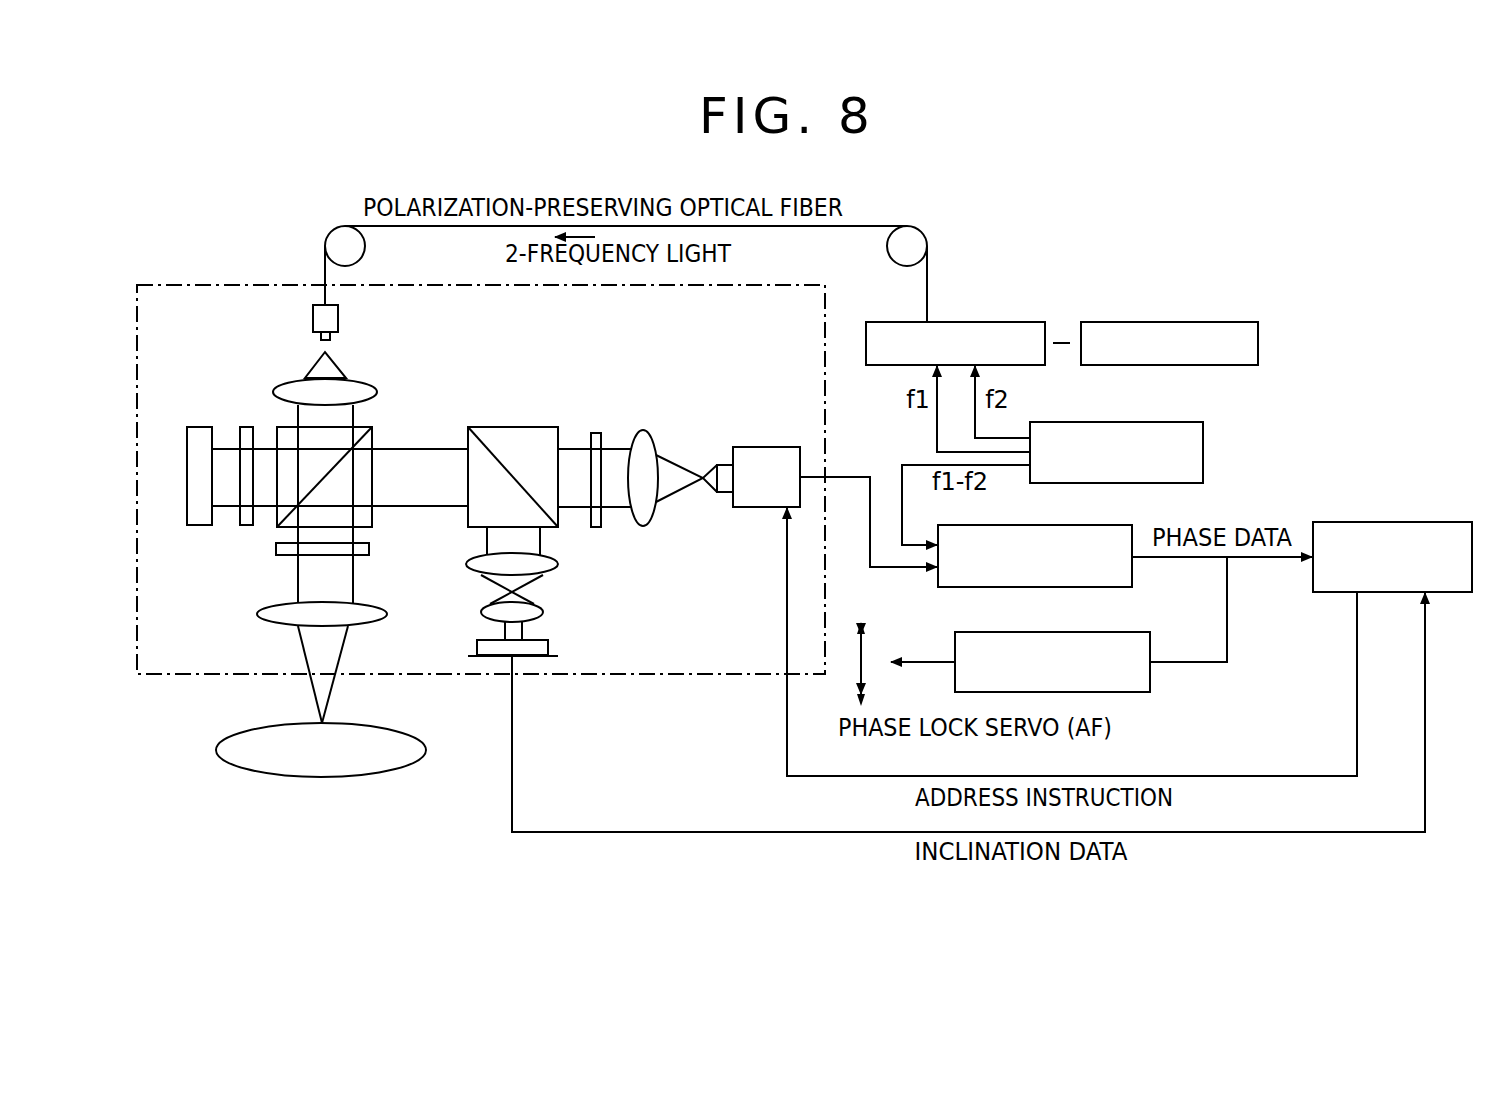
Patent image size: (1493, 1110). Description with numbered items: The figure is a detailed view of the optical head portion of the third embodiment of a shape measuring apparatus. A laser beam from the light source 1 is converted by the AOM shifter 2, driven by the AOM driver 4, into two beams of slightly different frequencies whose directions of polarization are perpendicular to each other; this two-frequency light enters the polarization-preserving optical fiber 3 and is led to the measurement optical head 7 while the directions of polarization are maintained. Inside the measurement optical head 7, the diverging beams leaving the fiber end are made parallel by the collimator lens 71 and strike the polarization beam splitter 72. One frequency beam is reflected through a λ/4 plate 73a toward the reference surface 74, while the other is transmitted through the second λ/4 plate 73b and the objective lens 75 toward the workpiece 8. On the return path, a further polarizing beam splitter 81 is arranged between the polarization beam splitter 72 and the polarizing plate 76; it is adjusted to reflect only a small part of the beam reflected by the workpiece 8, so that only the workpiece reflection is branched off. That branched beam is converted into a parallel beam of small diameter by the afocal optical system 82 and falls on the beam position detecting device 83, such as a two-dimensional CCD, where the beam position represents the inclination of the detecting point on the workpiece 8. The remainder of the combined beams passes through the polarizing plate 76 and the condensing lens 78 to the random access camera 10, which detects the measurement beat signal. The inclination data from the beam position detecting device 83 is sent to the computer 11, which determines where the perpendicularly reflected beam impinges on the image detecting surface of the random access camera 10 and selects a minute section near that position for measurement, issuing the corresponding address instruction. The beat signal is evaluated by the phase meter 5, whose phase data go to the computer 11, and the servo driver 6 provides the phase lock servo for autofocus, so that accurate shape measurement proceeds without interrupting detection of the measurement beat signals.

The light source 1 is at (1180, 321).
The AOM shifter 2 is at (985, 321).
The polarization-preserving optical fiber 3 is at (878, 226).
The AOM driver 4 is at (1205, 447).
The phase meter 5 is at (1032, 524).
The servo driver 6 is at (1068, 631).
The measurement optical head 7 is at (173, 277).
The workpiece 8 is at (423, 745).
The random access camera 10 is at (770, 447).
The computer 11 is at (1397, 521).
The collimator lens 71 is at (358, 380).
The polarization beam splitter 72 is at (372, 427).
The λ/4 plate 73a is at (246, 427).
The λ/4 plate 73b is at (369, 550).
The reference surface 74 is at (200, 427).
The objective lens 75 is at (258, 613).
The polarizing plate 76 is at (598, 433).
The condensing lens 78 is at (650, 432).
The polarizing beam splitter 81 is at (497, 427).
The afocal optical system 82 is at (565, 557).
The beam position detecting device 83 is at (550, 653).